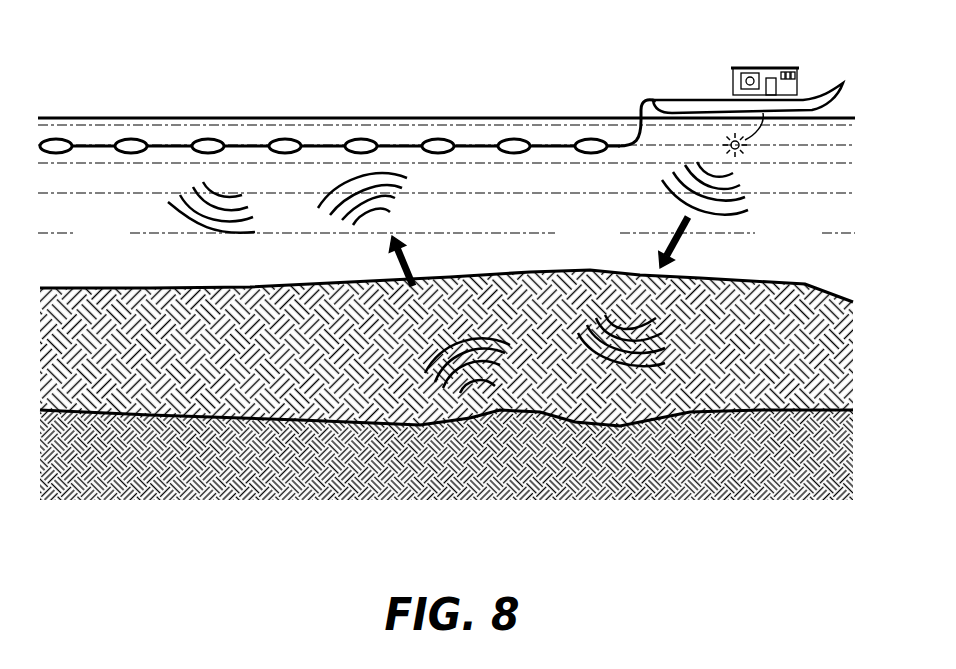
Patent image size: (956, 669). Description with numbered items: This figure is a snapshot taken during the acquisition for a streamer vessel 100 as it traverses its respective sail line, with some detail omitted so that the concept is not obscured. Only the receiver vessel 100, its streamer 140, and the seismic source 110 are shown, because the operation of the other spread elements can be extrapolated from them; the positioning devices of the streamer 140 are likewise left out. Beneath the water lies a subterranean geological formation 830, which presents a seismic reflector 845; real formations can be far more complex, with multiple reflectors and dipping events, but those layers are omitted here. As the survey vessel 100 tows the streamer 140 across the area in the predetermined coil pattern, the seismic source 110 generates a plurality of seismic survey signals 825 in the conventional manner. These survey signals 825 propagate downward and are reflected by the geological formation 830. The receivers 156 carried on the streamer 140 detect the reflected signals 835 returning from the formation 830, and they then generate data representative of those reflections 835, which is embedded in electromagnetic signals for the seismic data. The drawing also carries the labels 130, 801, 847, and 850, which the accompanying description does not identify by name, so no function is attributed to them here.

The survey vessel 100 is at (823, 92).
The seismic source 110 is at (752, 153).
The recording system / cabin 130 is at (745, 77).
The streamer 140 is at (642, 102).
The receivers 156 is at (328, 116).
The body of water 801 is at (808, 246).
The seismic survey signals 825 is at (654, 213).
The subterranean geological formation 830 is at (384, 371).
The reflected signals 835 is at (419, 203).
The seismic reflector 845 is at (703, 412).
The water bottom (seafloor) 847 is at (187, 287).
The reflected seismic energy 850 is at (165, 221).